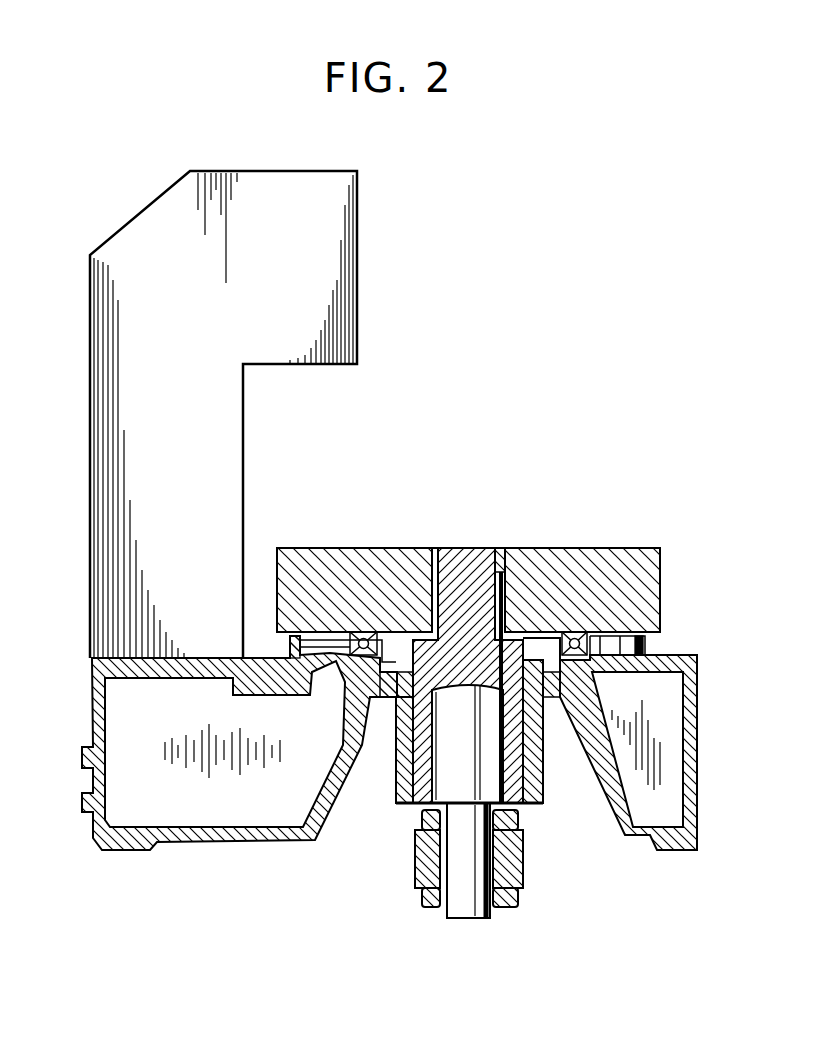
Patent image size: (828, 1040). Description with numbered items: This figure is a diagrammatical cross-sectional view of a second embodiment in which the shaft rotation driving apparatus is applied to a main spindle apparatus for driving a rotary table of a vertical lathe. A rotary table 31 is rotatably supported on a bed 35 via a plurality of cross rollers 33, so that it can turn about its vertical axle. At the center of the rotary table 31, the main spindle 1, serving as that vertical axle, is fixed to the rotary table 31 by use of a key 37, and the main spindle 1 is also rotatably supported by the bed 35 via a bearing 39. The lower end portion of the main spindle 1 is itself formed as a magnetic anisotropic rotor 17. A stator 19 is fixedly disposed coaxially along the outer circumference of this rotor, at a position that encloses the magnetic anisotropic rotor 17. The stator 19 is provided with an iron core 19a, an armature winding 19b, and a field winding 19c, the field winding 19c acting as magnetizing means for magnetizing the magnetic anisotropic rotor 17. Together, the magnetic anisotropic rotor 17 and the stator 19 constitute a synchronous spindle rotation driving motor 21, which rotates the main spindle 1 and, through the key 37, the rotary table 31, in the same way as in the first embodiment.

The main spindle 1 is at (447, 746).
The magnetic anisotropic rotor 17 is at (462, 860).
The stator 19 is at (467, 885).
The iron core 19a is at (424, 847).
The armature winding 19b is at (432, 909).
The field winding 19c is at (520, 822).
The synchronous spindle rotation driving motor 21 is at (470, 920).
The rotary table 31 is at (600, 548).
The cross rollers 33 is at (590, 636).
The bed 35 is at (697, 708).
The key 37 is at (499, 548).
The bearing 39 is at (517, 754).